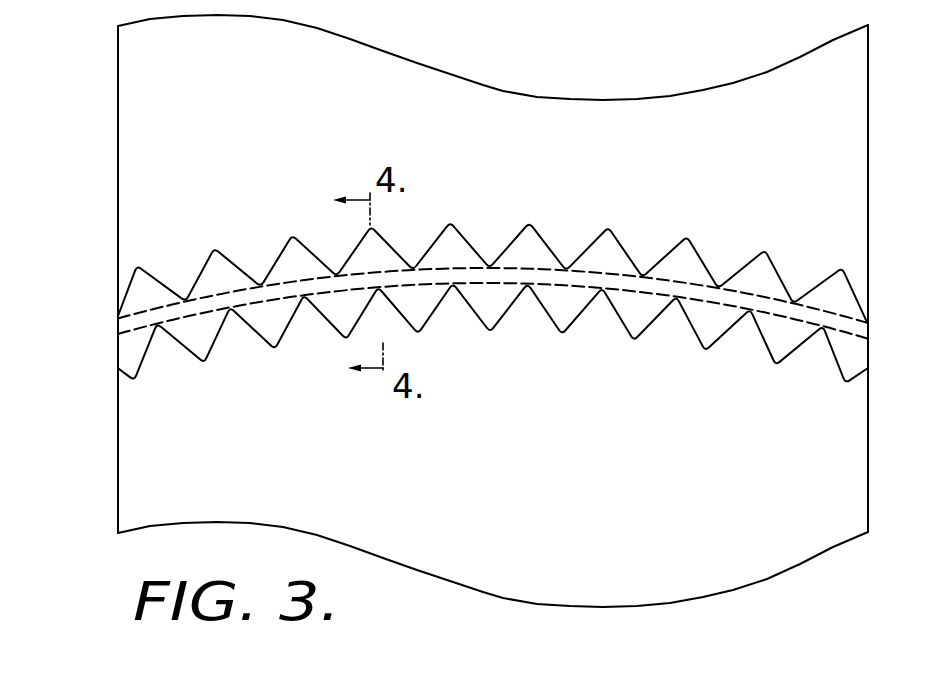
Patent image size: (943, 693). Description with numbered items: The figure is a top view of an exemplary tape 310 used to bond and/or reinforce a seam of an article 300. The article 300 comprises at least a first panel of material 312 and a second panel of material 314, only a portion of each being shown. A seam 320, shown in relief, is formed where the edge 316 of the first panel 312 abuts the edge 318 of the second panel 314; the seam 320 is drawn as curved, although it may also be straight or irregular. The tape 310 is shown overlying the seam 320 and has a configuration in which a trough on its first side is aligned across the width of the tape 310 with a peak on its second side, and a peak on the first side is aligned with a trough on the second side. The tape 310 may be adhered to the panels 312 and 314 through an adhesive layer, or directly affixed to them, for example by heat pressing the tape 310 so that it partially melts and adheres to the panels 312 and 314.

The article 300 is at (62, 90).
The tape 310 is at (208, 363).
The first panel of material 312 is at (540, 166).
The second panel of material 314 is at (560, 472).
The edge of the first panel 316 is at (794, 292).
The edge of the second panel 318 is at (600, 298).
The seam 320 is at (106, 320).